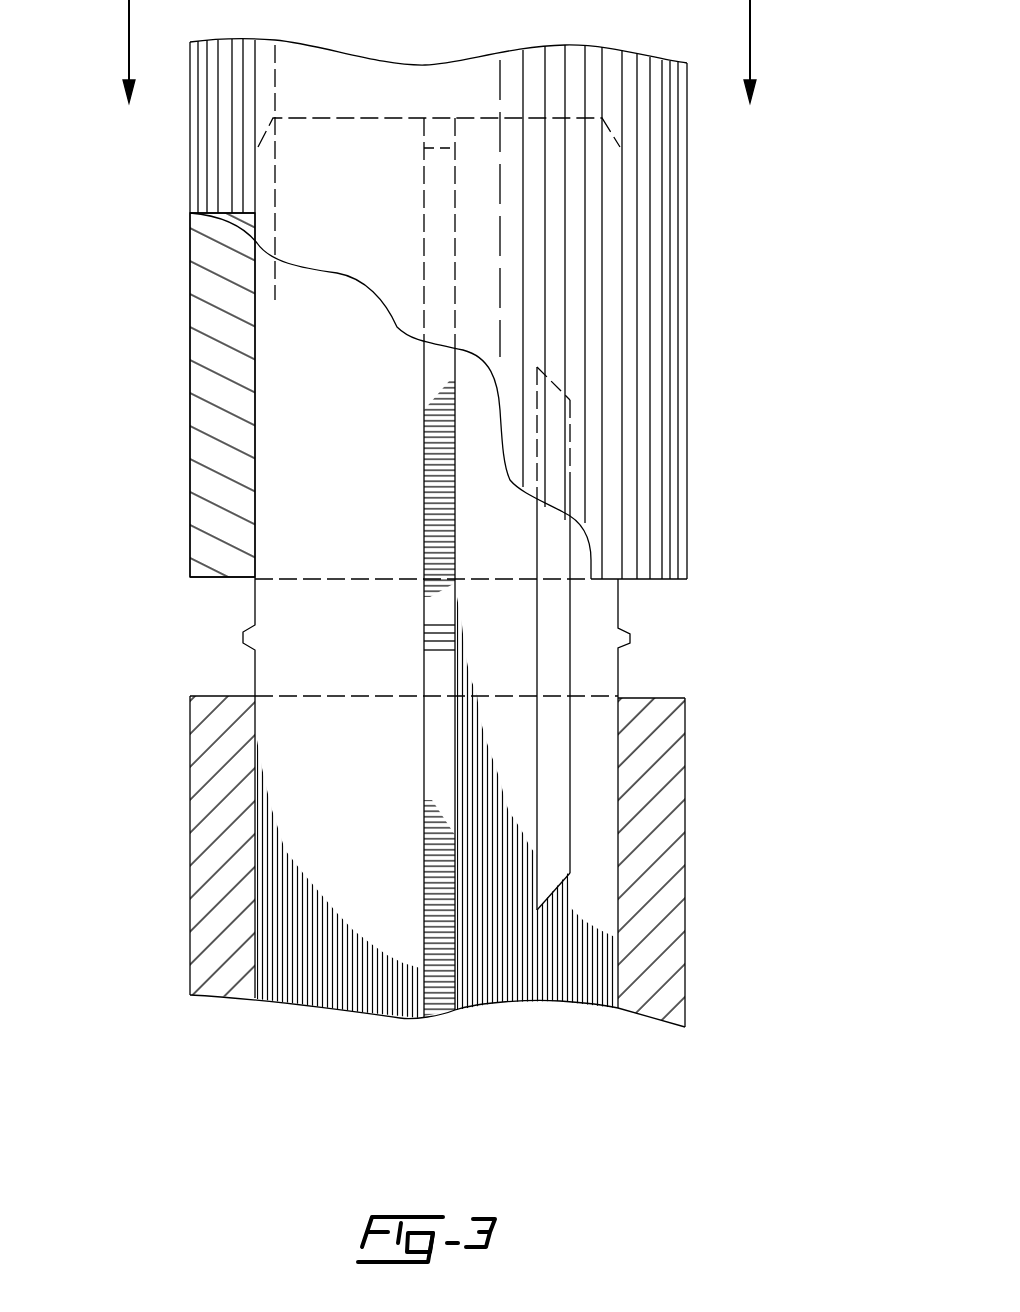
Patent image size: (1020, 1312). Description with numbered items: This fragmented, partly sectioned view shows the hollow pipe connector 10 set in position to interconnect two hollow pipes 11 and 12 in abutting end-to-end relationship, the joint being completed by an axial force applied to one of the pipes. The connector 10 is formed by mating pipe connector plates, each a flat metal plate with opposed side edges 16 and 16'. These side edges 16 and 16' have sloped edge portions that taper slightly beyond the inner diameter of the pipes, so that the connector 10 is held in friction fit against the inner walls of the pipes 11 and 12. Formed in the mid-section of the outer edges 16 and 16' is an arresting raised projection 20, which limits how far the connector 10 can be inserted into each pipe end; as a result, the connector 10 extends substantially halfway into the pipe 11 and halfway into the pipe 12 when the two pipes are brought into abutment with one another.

The pipe connector 10 is at (598, 820).
The pipe 11 is at (594, 307).
The pipe 12 is at (650, 918).
The side edge 16 is at (230, 879).
The side edge 16' is at (626, 847).
The arresting raised projection 20 is at (240, 636).